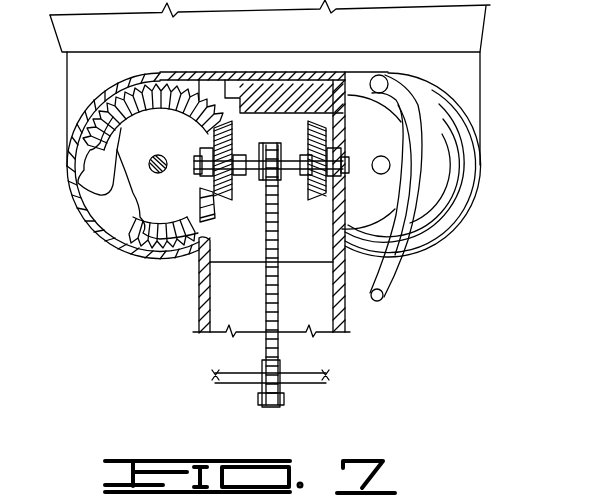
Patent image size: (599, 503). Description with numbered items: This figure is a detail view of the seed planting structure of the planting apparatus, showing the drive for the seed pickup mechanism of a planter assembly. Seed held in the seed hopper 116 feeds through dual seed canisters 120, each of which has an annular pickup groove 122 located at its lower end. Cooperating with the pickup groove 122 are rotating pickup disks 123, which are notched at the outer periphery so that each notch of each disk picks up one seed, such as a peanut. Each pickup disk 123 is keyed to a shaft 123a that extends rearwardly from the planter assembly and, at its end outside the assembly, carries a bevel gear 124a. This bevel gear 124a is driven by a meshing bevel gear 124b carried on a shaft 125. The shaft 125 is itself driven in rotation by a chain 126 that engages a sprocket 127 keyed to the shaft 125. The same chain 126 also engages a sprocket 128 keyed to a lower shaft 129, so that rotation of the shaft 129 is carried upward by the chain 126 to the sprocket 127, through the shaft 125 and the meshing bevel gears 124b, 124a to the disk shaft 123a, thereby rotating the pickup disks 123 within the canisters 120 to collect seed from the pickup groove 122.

The seed hopper 116 is at (283, 38).
The seed canister 120 is at (112, 76).
The annular pickup groove 122 is at (147, 245).
The pickup disk 123 is at (85, 158).
The shaft 123a is at (152, 174).
The bevel gear 124a is at (328, 123).
The bevel gear 124b is at (235, 128).
The shaft 125 is at (252, 170).
The chain 126 is at (268, 286).
The sprocket 127 is at (282, 181).
The sprocket 128 is at (280, 366).
The shaft 129 is at (242, 372).